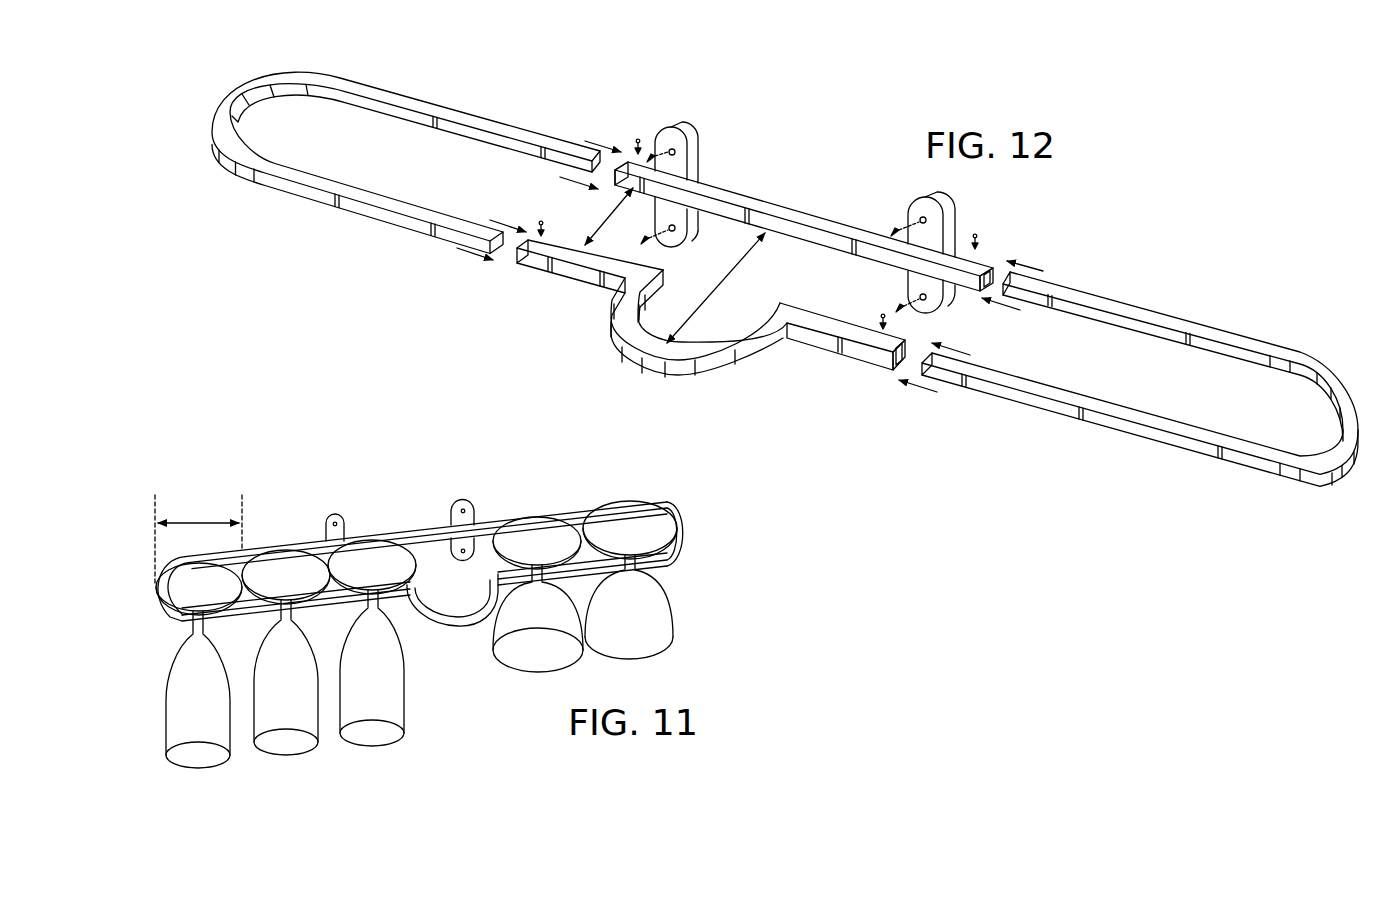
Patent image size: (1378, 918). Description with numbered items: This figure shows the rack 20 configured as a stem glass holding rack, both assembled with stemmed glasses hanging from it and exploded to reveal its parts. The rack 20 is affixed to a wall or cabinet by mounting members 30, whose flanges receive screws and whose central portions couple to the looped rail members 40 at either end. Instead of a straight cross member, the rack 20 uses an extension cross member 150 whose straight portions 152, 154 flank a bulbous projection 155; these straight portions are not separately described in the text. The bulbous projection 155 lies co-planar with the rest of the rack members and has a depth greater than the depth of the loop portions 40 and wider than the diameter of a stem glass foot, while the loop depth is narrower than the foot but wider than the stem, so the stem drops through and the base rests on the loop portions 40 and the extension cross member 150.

In FIG. 12, the rack 20 is at (731, 209).
In FIG. 11, the rack 20 is at (419, 597).
In FIG. 12, the mounting member 30 is at (739, 165).
In FIG. 12, the U-shaped loop rail section 40 is at (278, 54).
In FIG. 12, the extension cross member 150 is at (722, 327).
In FIG. 11, the extension cross member 150 is at (470, 634).
In FIG. 12, the first straight segment 152 is at (517, 256).
In FIG. 12, the second straight segment 154 is at (915, 345).
In FIG. 12, the bulbous projection 155 is at (706, 357).